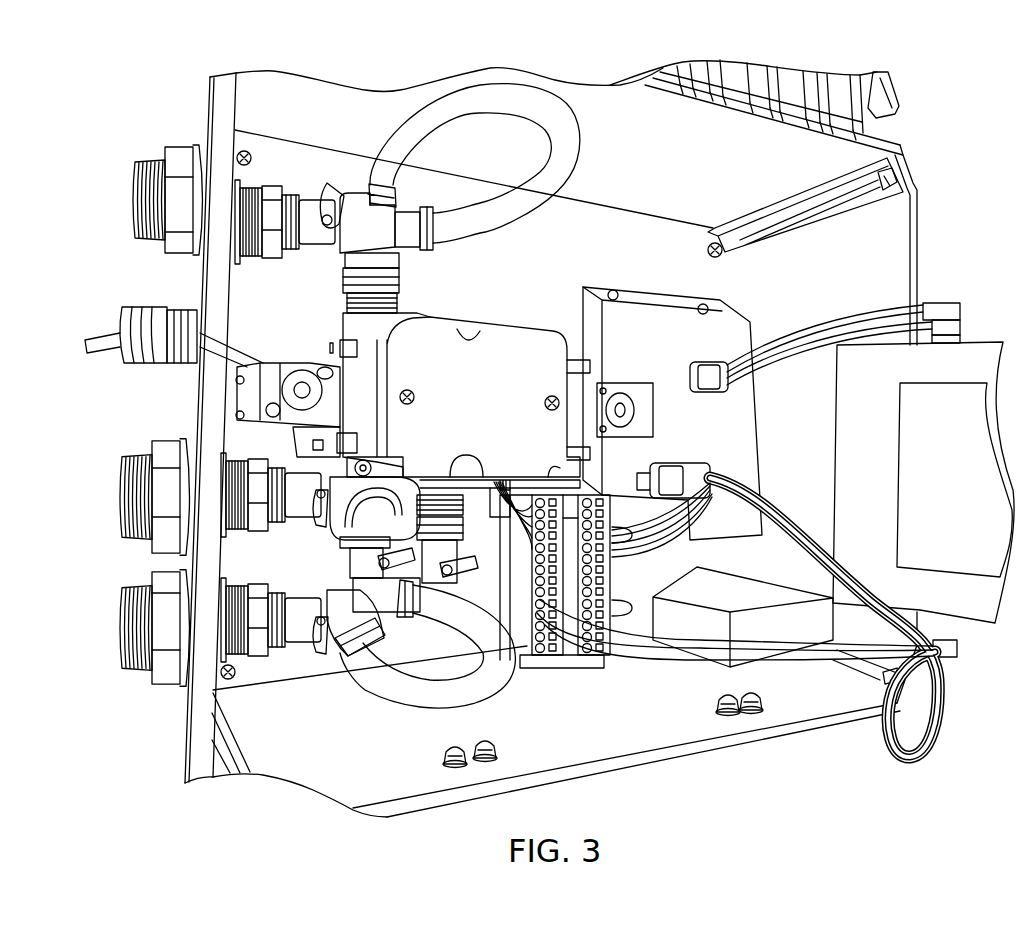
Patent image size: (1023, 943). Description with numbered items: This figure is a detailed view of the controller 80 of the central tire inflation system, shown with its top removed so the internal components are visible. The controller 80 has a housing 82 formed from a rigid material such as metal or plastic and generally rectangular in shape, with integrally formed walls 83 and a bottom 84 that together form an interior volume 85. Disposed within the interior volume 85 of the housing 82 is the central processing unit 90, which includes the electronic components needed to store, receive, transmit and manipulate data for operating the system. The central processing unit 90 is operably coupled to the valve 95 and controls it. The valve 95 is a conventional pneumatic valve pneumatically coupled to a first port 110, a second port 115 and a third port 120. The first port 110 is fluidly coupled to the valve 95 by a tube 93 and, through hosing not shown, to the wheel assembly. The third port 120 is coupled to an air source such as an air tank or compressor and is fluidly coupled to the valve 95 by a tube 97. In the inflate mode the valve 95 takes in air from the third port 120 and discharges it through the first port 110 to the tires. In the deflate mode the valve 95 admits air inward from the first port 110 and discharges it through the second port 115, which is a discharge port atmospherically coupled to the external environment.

The controller 80 is at (955, 108).
The housing 82 is at (968, 222).
The walls 83 is at (793, 762).
The bottom 84 is at (570, 223).
The interior volume 85 is at (779, 40).
The central processing unit 90 is at (727, 427).
The tube 93 is at (463, 103).
The valve 95 is at (510, 428).
The tube 97 is at (493, 670).
The first port 110 is at (133, 188).
The second port 115 is at (120, 508).
The third port 120 is at (120, 630).